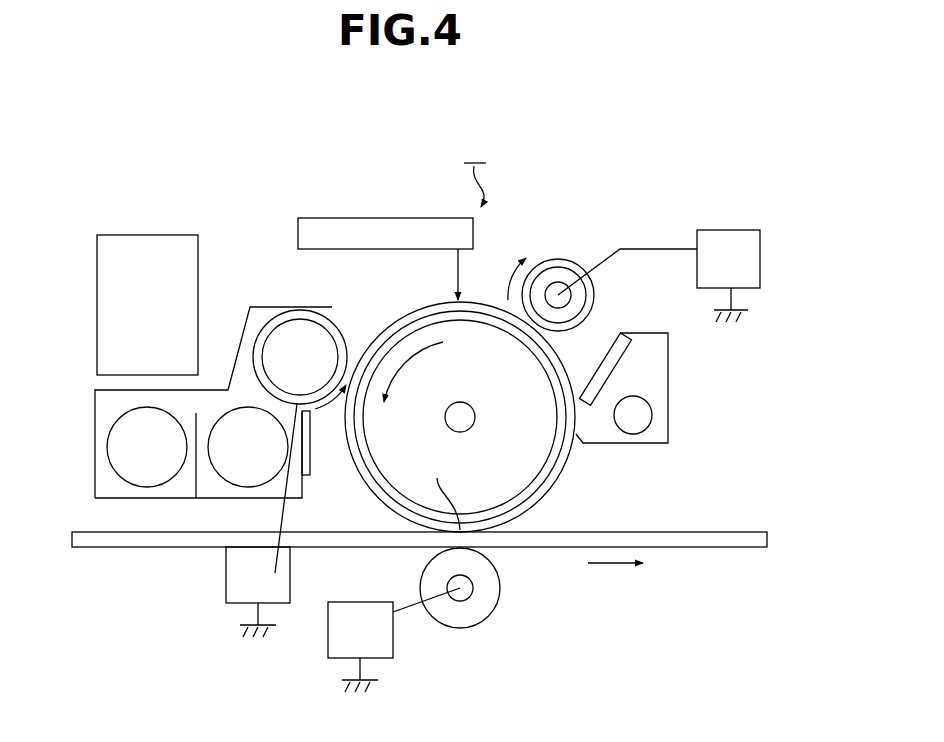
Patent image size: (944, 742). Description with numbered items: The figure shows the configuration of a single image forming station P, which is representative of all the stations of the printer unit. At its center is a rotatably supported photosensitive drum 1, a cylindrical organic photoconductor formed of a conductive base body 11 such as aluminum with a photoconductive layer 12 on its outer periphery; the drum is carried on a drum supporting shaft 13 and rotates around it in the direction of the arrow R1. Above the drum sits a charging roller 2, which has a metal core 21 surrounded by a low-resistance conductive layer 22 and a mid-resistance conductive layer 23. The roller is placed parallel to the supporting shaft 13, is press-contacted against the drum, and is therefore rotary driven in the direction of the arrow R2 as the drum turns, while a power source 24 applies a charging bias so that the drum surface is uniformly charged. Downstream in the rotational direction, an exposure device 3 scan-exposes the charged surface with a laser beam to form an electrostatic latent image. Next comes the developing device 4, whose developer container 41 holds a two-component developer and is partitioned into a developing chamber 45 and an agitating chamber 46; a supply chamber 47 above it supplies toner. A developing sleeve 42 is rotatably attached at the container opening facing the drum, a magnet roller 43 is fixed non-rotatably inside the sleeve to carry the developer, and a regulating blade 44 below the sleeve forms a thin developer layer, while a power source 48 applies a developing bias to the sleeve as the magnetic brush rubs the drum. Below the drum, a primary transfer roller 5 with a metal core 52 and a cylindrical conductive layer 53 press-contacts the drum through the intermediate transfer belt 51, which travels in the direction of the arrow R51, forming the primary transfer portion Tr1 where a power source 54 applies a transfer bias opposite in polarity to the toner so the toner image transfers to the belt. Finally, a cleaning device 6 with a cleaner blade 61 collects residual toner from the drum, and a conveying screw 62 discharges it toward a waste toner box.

The photosensitive drum 1 is at (449, 393).
The conductive base body 11 is at (437, 325).
The photoconductive layer 12 is at (392, 326).
The drum supporting shaft 13 is at (475, 420).
The charging roller 2 is at (615, 248).
The metal core 21 is at (572, 295).
The low-resistance conductive layer 22 is at (563, 270).
The mid-resistance conductive layer 23 is at (540, 262).
The power source 24 is at (730, 230).
The exposure device 3 is at (385, 218).
The developing device 4 is at (199, 415).
The developer container 41 is at (95, 447).
The developing sleeve 42 is at (285, 326).
The magnet roller 43 is at (270, 327).
The regulating blade 44 is at (312, 442).
The developing chamber 45 is at (240, 487).
The agitating chamber 46 is at (133, 487).
The supply chamber 47 is at (97, 312).
The power source 48 is at (226, 578).
The primary transfer roller 5 is at (415, 635).
The intermediate transfer belt 51 is at (650, 532).
The metal core 52 is at (474, 590).
The conductive layer 53 is at (490, 618).
The power source 54 is at (328, 640).
The cleaning device 6 is at (648, 388).
The cleaner blade 61 is at (595, 380).
The conveying screw 62 is at (653, 414).
The image forming station P is at (475, 172).
The arrow R1 is at (416, 372).
The arrow R2 is at (498, 279).
The arrow R51 is at (615, 584).
The primary transfer portion Tr1 is at (440, 489).